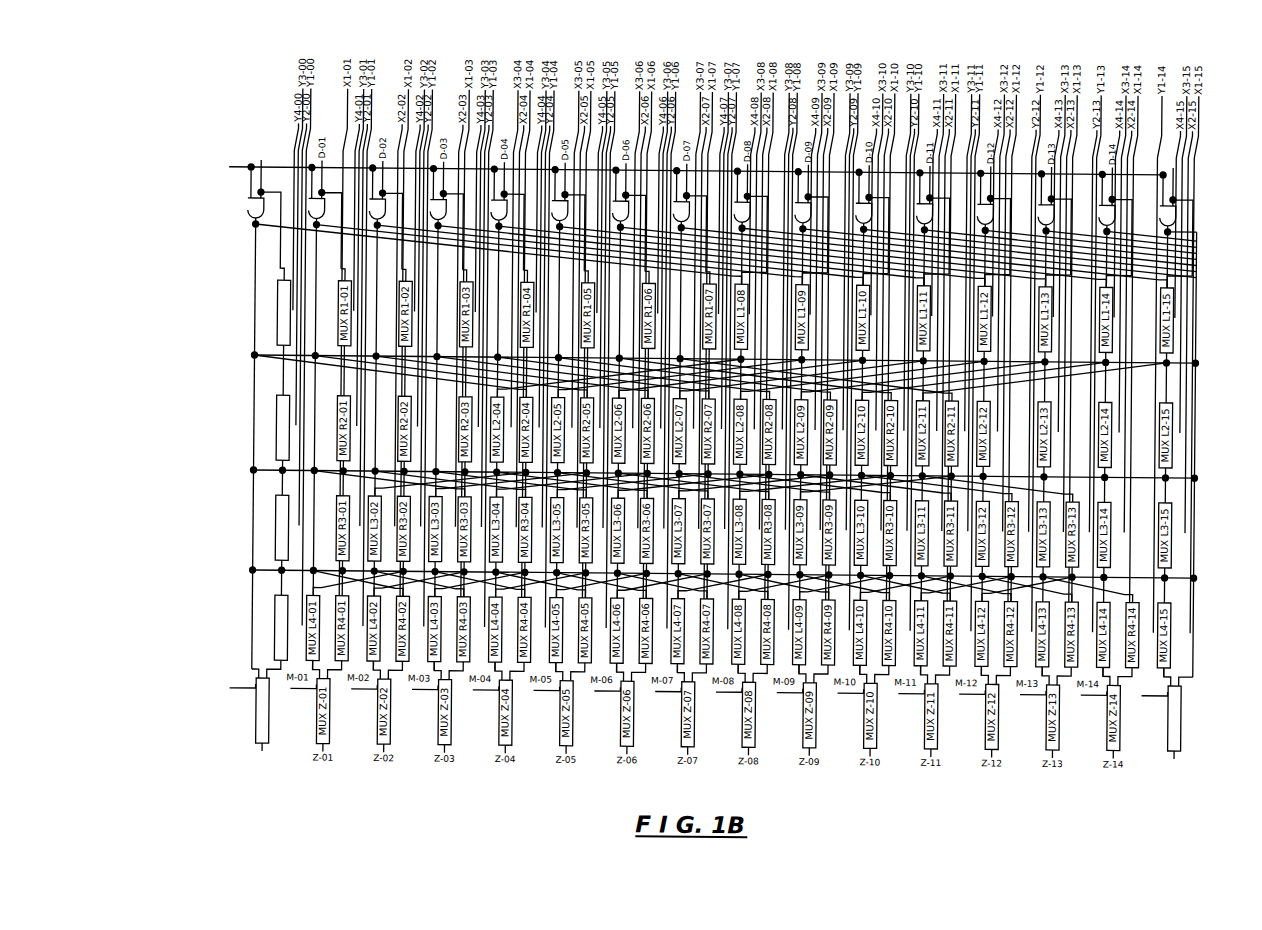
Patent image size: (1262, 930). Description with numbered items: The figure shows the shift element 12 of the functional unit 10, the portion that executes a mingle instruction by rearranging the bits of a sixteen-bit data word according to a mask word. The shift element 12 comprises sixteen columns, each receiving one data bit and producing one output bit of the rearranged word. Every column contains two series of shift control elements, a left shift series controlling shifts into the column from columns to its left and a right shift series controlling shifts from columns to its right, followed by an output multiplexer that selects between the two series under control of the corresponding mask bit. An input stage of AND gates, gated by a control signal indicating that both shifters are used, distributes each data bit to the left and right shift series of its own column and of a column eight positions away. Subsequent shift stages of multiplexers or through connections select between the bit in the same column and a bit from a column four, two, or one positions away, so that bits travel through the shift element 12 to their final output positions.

The functional unit 10 is at (996, 818).
The shift element 12 is at (612, 794).